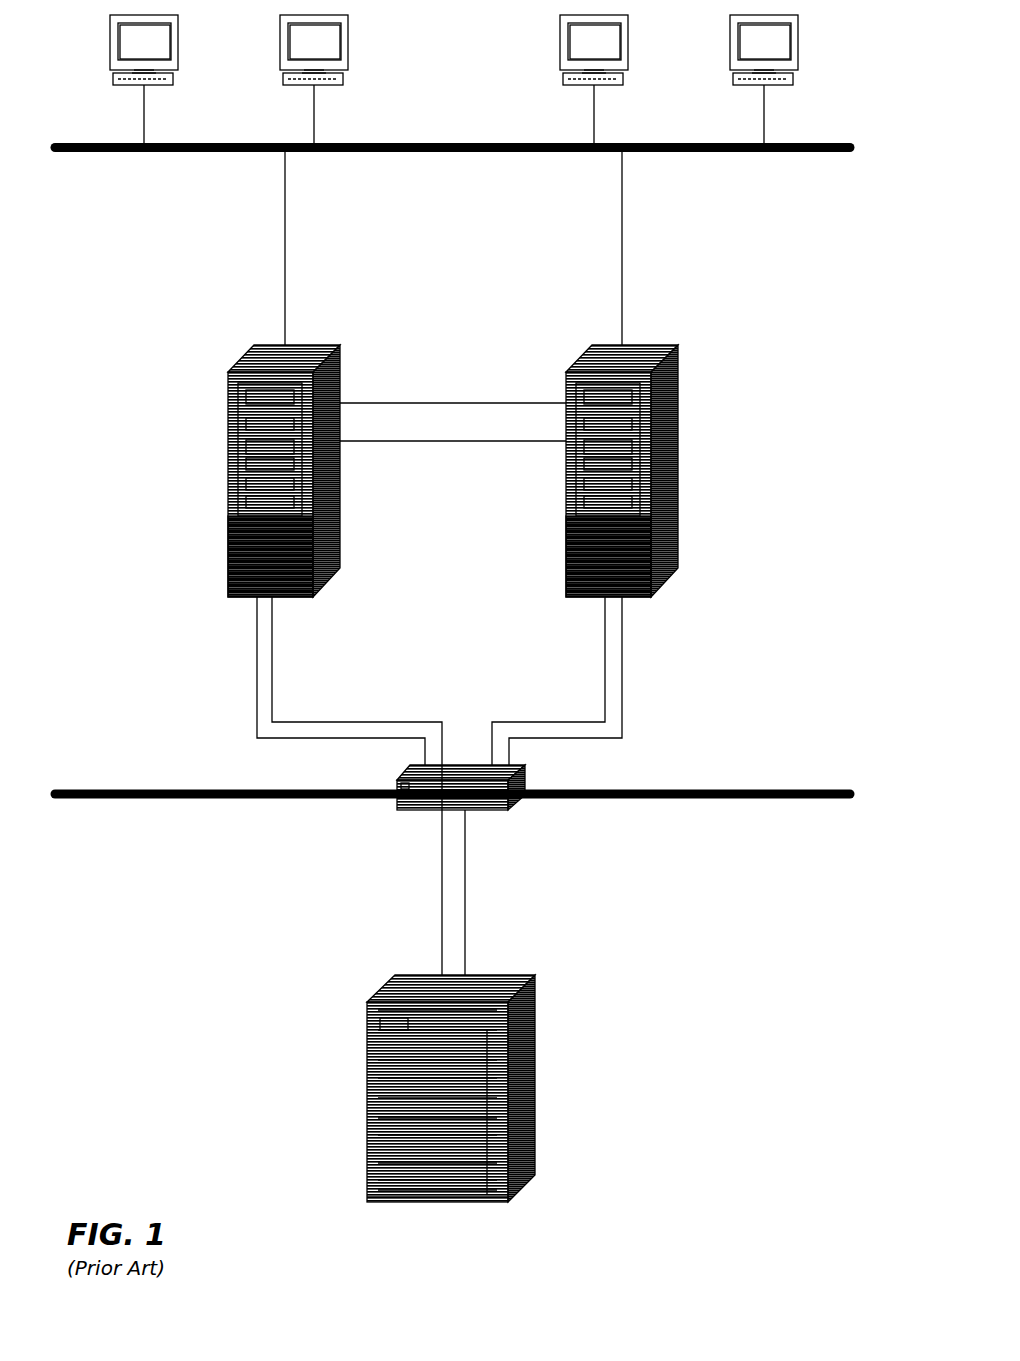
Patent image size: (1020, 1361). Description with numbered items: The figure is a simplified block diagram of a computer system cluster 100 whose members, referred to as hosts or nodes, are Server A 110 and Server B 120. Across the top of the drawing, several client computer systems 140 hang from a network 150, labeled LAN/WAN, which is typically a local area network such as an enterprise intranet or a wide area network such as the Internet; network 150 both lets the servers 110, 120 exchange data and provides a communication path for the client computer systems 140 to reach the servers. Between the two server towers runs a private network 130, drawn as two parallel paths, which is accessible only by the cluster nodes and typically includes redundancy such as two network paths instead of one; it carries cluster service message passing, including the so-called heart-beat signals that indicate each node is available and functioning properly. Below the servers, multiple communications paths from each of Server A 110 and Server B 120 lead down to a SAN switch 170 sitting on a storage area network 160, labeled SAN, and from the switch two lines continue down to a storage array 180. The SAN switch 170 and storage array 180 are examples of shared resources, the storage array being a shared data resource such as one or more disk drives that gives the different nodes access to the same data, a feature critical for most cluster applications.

The cluster 100 is at (772, 1232).
The Server A 110 is at (228, 458).
The Server B 120 is at (680, 453).
The private network 130 is at (430, 403).
The client computer systems 140 is at (797, 47).
The network 150 is at (700, 155).
The storage area network (SAN) 160 is at (700, 800).
The SAN switch 170 is at (410, 808).
The storage array 180 is at (520, 1090).